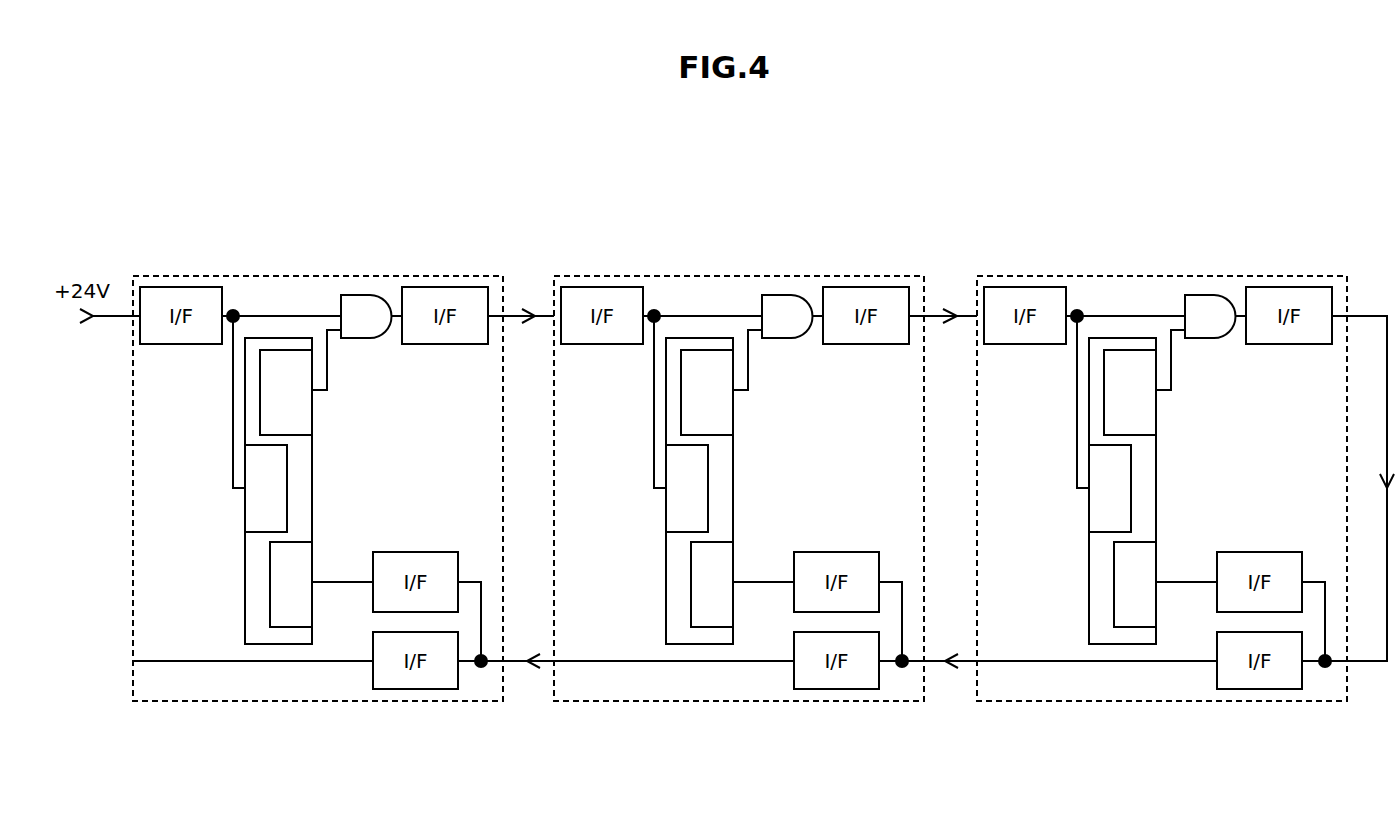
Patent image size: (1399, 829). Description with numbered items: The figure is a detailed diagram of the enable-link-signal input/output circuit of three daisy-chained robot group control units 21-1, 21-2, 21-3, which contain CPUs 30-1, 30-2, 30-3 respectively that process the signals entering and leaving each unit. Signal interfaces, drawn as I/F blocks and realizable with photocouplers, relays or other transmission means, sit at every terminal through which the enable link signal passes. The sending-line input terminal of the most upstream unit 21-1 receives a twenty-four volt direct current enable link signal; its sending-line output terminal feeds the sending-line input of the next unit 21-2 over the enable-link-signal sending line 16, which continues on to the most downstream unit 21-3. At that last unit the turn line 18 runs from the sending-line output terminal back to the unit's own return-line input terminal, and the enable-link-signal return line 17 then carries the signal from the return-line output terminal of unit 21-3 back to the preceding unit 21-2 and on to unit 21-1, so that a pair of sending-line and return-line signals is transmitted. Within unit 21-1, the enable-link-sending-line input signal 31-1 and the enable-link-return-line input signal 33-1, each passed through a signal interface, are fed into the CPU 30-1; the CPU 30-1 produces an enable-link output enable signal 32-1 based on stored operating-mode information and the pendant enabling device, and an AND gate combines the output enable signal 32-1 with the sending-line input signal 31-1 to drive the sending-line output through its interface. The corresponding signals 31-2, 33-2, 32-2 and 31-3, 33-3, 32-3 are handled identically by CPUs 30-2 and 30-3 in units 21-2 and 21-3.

The enable-link-signal sending line 16 is at (957, 313).
The enable-link-signal return line 17 is at (950, 670).
The turn line 18 is at (1378, 313).
The robot group control unit 21-1 is at (420, 276).
The robot group control unit 21-2 is at (741, 276).
The robot group control unit 21-3 is at (1167, 277).
The CPU 30-1 is at (312, 510).
The CPU 30-2 is at (733, 465).
The CPU 30-3 is at (1156, 465).
The enable-link-sending-line input signal 31-1 is at (265, 315).
The enable-link-sending-line input signal 31-2 is at (655, 452).
The enable-link-sending-line input signal 31-3 is at (1077, 453).
The enable-link output enable signal 32-1 is at (327, 360).
The enable-link output enable signal 32-2 is at (748, 348).
The enable-link output enable signal 32-3 is at (1171, 348).
The enable-link-return-line input signal 33-1 is at (337, 582).
The enable-link-return-line input signal 33-2 is at (750, 582).
The enable-link-return-line input signal 33-3 is at (1170, 582).